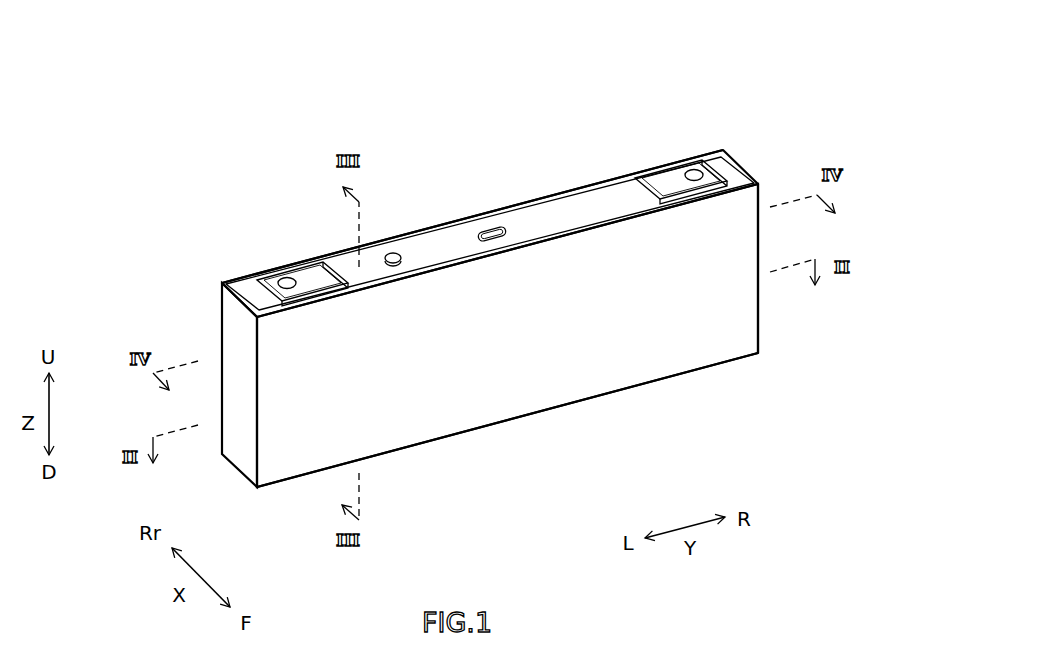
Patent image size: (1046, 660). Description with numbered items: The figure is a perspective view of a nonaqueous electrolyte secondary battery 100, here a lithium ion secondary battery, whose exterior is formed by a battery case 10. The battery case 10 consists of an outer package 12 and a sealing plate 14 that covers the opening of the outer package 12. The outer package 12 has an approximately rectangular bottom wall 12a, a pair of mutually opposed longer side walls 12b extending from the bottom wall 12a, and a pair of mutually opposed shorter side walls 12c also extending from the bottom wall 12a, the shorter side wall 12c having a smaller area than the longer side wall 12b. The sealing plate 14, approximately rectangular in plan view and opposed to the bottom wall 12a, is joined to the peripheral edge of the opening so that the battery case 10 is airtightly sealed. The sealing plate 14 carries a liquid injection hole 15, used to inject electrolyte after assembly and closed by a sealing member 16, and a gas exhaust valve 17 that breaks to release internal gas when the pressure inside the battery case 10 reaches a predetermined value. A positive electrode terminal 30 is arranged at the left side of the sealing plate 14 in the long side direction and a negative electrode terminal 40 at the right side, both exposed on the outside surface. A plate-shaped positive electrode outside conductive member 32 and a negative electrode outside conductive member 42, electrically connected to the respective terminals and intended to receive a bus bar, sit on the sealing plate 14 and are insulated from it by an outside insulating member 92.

The nonaqueous electrolyte secondary battery 100 is at (672, 67).
The battery case 10 is at (552, 122).
The outer package 12 is at (606, 262).
The bottom wall 12a is at (468, 432).
The longer side wall 12b is at (464, 216).
The shorter side wall 12c is at (232, 442).
The sealing plate 14 is at (559, 212).
The liquid injection hole 15 is at (398, 250).
The sealing member 16 is at (391, 252).
The gas exhaust valve 17 is at (494, 226).
The positive electrode terminal 30 is at (283, 278).
The positive electrode outside conductive member 32 is at (321, 273).
The negative electrode terminal 40 is at (693, 167).
The negative electrode outside conductive member 42 is at (659, 181).
The outside insulating member 92 is at (250, 287).